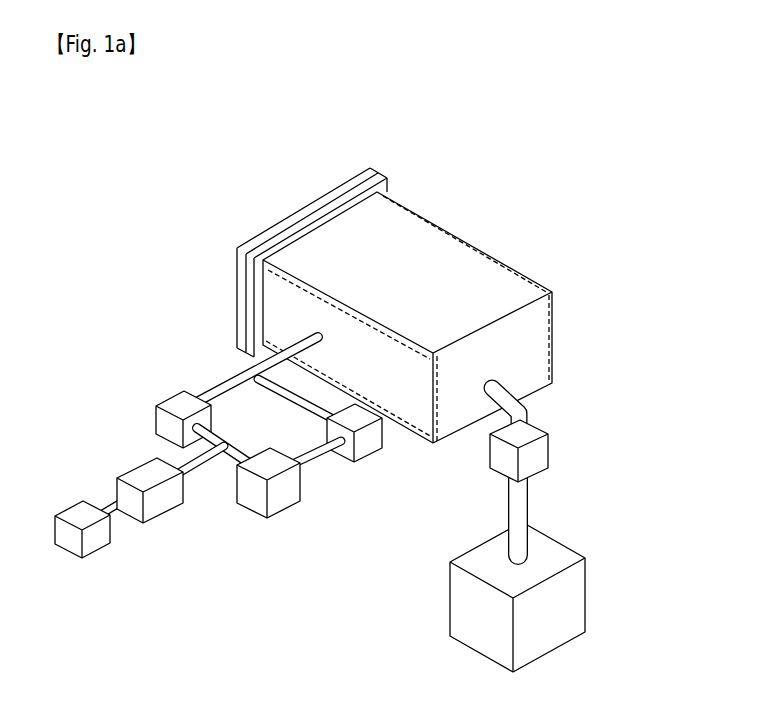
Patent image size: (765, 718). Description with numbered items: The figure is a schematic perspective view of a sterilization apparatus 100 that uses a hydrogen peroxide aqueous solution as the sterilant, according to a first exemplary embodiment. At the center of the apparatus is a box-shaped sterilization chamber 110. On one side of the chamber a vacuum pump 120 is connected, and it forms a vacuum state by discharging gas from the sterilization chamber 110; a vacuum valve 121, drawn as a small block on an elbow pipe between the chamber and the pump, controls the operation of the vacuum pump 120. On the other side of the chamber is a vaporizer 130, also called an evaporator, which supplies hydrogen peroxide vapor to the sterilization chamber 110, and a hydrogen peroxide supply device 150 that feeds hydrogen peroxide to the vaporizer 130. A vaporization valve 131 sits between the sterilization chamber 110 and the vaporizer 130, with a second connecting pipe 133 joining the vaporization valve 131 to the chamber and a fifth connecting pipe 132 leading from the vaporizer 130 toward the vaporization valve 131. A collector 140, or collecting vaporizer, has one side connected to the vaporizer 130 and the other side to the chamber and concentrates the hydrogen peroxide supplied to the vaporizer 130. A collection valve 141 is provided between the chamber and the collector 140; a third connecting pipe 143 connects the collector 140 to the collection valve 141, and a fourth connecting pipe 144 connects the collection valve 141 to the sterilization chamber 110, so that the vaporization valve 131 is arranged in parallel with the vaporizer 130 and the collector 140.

The sterilization apparatus 100 is at (471, 137).
The sterilization chamber 110 is at (429, 315).
The vacuum pump 120 is at (548, 571).
The vacuum valve 121 is at (568, 430).
The vaporizer 130 is at (115, 458).
The vaporization valve 131 is at (151, 384).
The fifth connecting pipe 132 is at (208, 497).
The second connecting pipe 133 is at (237, 377).
The collector 140 is at (288, 527).
The collection valve 141 is at (375, 478).
The third connecting pipe 143 is at (324, 492).
The fourth connecting pipe 144 is at (302, 405).
The hydrogen peroxide supply device 150 is at (105, 573).